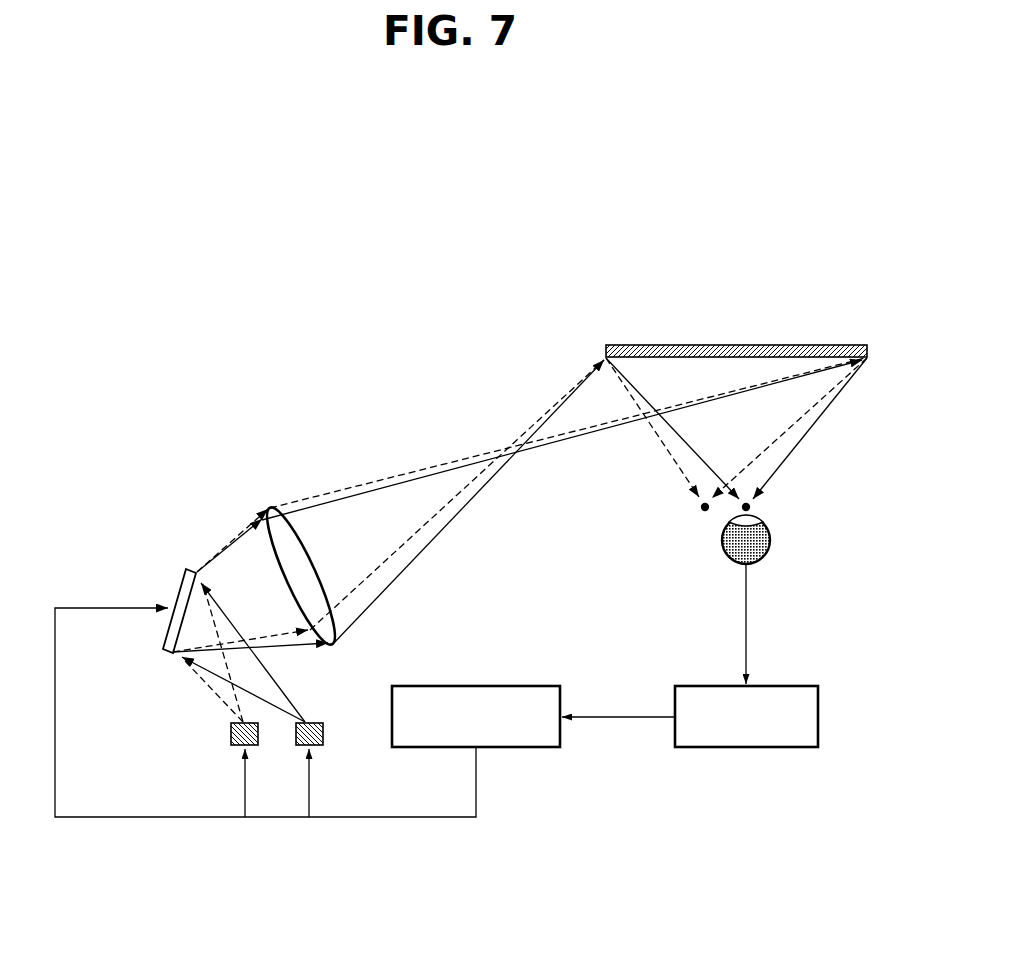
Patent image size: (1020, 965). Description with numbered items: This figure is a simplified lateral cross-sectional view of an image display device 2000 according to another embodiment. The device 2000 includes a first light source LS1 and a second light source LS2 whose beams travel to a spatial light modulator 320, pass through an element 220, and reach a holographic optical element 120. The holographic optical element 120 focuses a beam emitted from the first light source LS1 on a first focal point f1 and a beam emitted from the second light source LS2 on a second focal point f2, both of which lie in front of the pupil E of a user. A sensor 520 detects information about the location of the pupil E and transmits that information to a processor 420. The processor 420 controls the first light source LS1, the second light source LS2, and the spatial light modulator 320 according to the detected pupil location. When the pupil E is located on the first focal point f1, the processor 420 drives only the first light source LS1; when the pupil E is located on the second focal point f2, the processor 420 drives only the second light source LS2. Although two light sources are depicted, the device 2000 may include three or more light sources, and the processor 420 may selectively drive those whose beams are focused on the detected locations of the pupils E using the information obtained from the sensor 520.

The image display device 2000 is at (250, 349).
The holographic optical element 120 is at (790, 345).
The lens 220 is at (307, 548).
The spatial light modulator 320 is at (182, 590).
The first light source LS1 is at (231, 733).
The second light source LS2 is at (323, 733).
The first focal point f1 is at (702, 508).
The second focal point f2 is at (749, 508).
The pupil E is at (770, 541).
The processor 420 is at (515, 748).
The sensor 520 is at (747, 748).